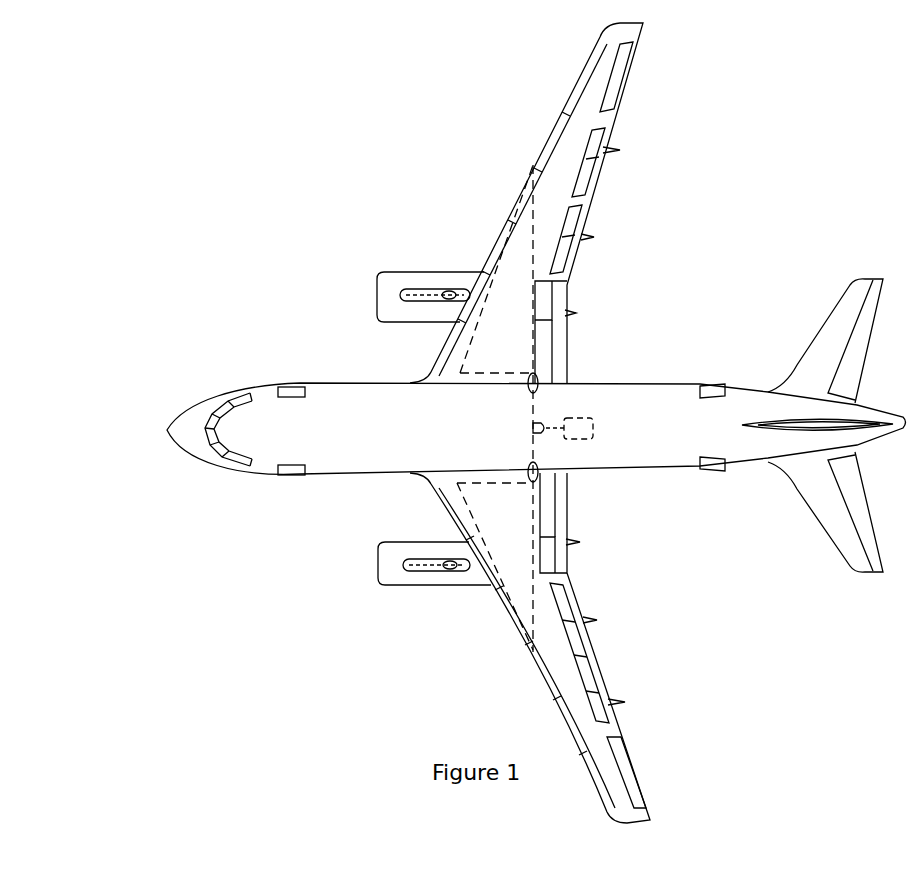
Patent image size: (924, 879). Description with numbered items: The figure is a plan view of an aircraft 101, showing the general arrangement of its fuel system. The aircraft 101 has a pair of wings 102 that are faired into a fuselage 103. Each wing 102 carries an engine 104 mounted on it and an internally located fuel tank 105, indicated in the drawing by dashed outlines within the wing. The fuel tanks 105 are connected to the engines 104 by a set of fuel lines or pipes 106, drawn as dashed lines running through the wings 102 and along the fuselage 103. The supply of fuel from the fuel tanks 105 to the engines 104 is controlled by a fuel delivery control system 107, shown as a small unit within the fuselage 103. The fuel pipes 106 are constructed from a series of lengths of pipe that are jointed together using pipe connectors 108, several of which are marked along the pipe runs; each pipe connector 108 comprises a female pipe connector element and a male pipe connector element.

The aircraft 101 is at (184, 317).
The wing 102 is at (613, 44).
The fuselage 103 is at (743, 463).
The engine 104 is at (393, 295).
The fuel tank 105 is at (488, 290).
The fuel pipe 106 is at (530, 400).
The fuel delivery control system 107 is at (570, 413).
The pipe connector 108 is at (445, 290).